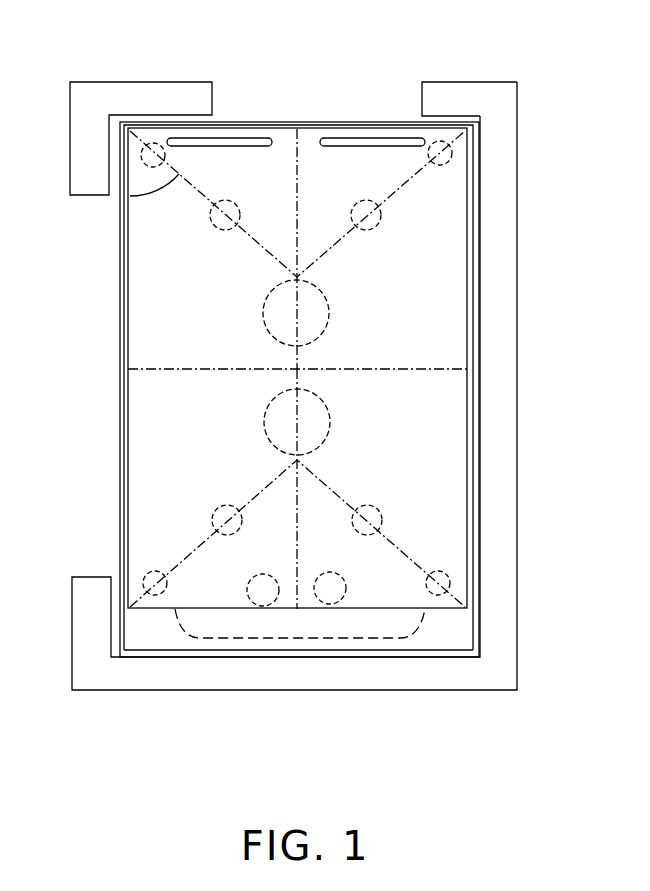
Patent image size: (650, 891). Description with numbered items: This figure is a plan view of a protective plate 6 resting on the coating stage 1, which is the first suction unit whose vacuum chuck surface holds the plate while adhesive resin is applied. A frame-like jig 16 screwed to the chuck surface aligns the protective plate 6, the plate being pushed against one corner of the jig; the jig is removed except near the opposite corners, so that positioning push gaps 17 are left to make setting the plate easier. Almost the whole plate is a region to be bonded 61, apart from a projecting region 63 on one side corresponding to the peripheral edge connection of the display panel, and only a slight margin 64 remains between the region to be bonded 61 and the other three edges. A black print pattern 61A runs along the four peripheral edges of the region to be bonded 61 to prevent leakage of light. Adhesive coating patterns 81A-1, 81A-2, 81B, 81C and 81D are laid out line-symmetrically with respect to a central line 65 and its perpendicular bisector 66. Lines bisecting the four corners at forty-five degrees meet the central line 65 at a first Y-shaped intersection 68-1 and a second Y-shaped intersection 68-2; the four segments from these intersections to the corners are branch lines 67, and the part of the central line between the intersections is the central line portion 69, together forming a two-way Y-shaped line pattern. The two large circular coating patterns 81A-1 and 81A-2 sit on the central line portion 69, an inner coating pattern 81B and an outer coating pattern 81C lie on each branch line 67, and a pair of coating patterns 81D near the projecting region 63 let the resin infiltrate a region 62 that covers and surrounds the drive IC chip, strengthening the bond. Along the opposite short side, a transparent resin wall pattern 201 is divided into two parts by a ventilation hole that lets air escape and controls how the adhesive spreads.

The coating stage 1 is at (319, 363).
The protective plate 6 is at (317, 403).
The frame-like jig 16 is at (148, 90).
The positioning push gaps 17 is at (331, 93).
The region to be bonded 61 is at (118, 328).
The black print pattern 61A is at (127, 280).
The region covering the drive IC chip 62 is at (243, 643).
The projecting region 63 is at (445, 635).
The margin 64 is at (120, 433).
The central line 65 is at (300, 122).
The perpendicular bisector 66 is at (120, 372).
The branch lines 67 is at (385, 212).
The first Y-shaped intersection 68-1 is at (303, 278).
The second Y-shaped intersection 68-2 is at (292, 458).
The central line portion 69 is at (297, 350).
The coating pattern 81A-1 is at (333, 312).
The coating pattern 81A-2 is at (332, 415).
The inner coating pattern 81B is at (380, 510).
The outer coating pattern 81C is at (455, 578).
The coating pattern for the drive IC chip 81D is at (323, 607).
The wall pattern 201 is at (248, 137).